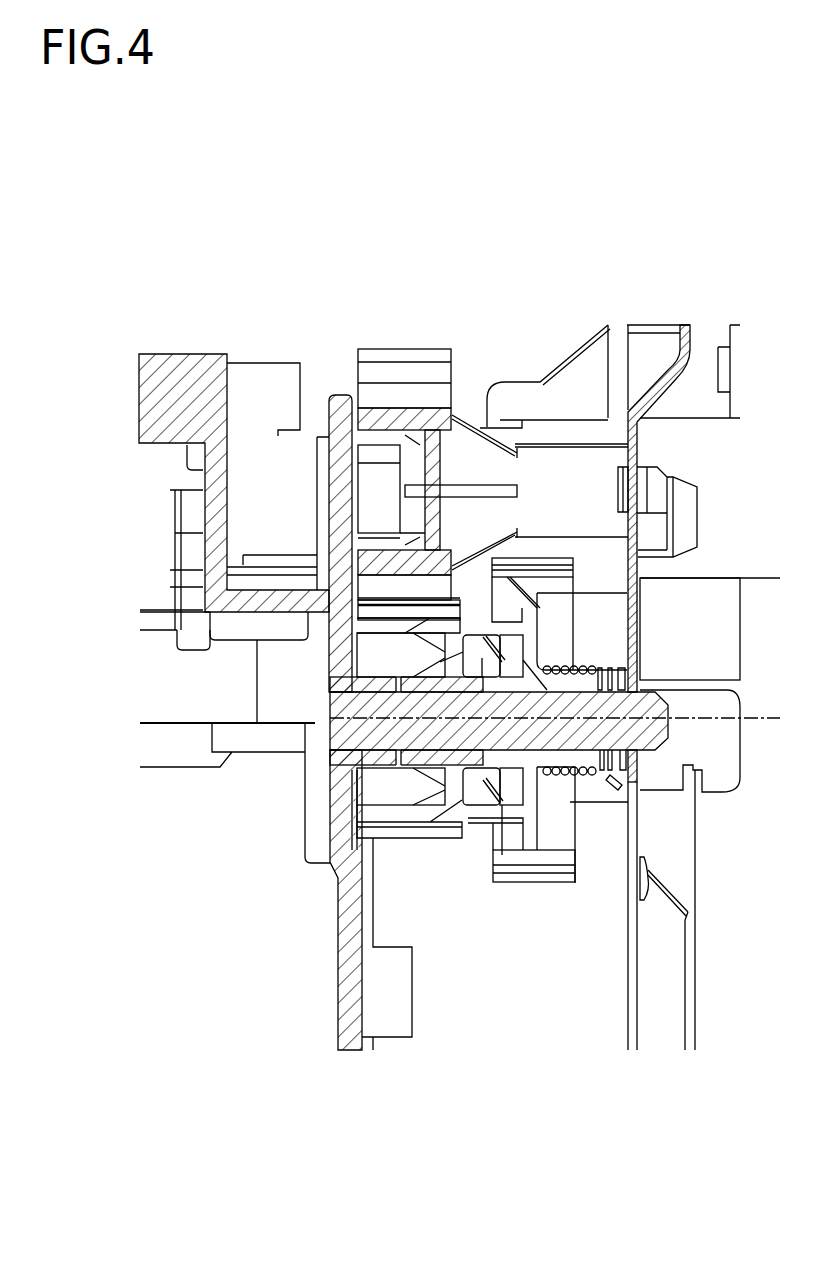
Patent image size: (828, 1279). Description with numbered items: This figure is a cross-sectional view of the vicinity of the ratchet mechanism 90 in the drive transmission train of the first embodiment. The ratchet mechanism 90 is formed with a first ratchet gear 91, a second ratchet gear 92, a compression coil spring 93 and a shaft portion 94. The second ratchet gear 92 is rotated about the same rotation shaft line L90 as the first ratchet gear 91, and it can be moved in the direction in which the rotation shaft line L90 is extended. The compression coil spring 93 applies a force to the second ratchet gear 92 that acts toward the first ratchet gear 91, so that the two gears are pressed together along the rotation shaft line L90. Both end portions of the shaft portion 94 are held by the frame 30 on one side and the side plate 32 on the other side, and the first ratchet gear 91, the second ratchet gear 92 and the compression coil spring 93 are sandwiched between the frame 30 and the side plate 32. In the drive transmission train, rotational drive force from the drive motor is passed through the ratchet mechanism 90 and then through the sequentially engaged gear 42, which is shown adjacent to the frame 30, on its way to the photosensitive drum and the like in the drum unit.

The frame 30 is at (340, 395).
The side plate 32 is at (683, 345).
The gear 42 is at (405, 408).
The ratchet mechanism 90 is at (504, 853).
The first ratchet gear 91 is at (420, 815).
The second ratchet gear 92 is at (530, 857).
The compression coil spring 93 is at (600, 785).
The shaft portion 94 is at (645, 730).
The rotation shaft line L90 is at (750, 720).